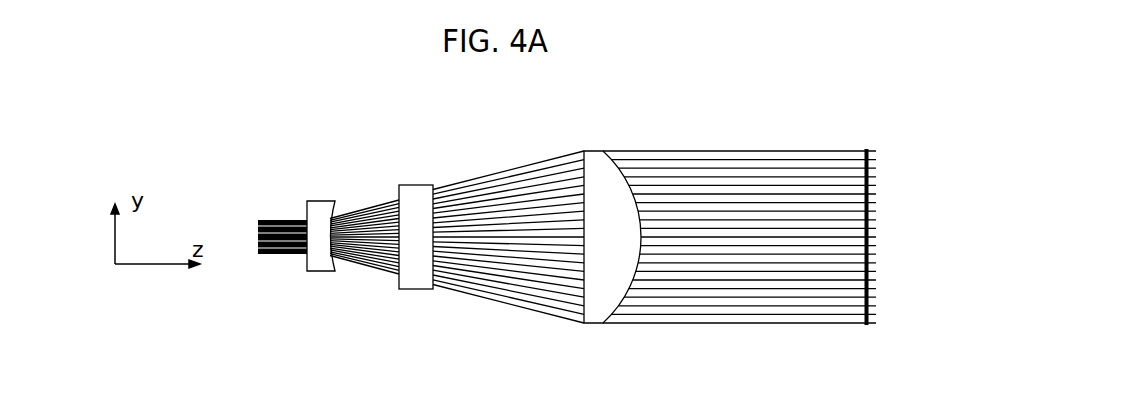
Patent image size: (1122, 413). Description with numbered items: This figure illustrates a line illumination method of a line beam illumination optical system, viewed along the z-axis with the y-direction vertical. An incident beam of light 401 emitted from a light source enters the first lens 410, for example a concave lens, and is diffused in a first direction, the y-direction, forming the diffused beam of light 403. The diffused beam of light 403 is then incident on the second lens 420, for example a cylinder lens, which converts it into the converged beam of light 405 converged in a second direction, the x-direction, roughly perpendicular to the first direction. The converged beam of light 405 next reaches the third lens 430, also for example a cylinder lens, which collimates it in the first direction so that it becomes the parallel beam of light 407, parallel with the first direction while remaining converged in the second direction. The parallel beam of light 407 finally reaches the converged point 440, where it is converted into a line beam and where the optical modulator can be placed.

The incident beam of light 401 is at (275, 220).
The first lens 410 is at (321, 201).
The diffused beam of light 403 is at (369, 208).
The second lens 420 is at (412, 185).
The converged beam of light 405 is at (504, 172).
The third lens 430 is at (588, 150).
The parallel beam of light 407 is at (724, 151).
The converged point 440 is at (865, 150).